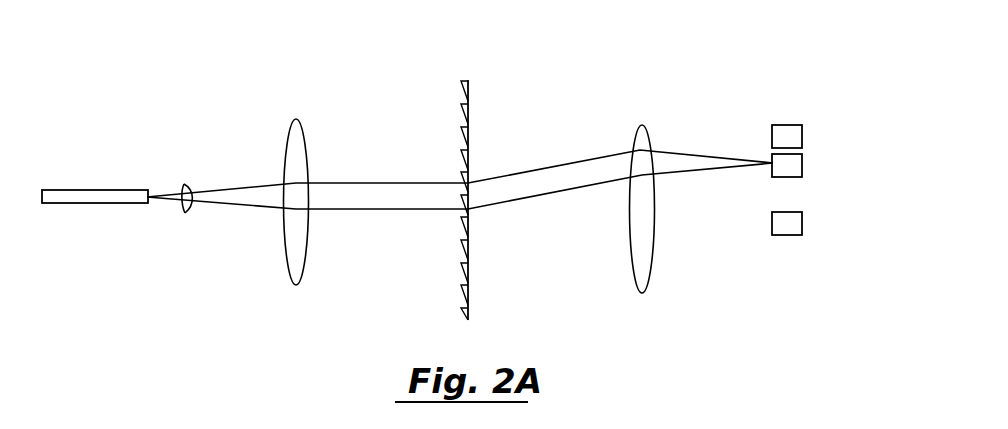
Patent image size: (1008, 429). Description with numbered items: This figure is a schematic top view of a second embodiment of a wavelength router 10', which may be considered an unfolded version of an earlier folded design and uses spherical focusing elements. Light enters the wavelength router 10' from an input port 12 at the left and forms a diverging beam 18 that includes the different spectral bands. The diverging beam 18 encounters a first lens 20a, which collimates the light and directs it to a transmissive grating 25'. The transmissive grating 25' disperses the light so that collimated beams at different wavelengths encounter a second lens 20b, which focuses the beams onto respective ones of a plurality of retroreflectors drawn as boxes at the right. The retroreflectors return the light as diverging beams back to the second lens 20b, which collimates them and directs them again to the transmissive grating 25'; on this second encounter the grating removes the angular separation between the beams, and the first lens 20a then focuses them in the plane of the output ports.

The wavelength router 10' is at (460, 232).
The input port 12 is at (140, 190).
The diverging beam 18 is at (184, 186).
The first lens 20a is at (308, 153).
The transmissive grating 25' is at (504, 181).
The second lens 20b is at (647, 137).